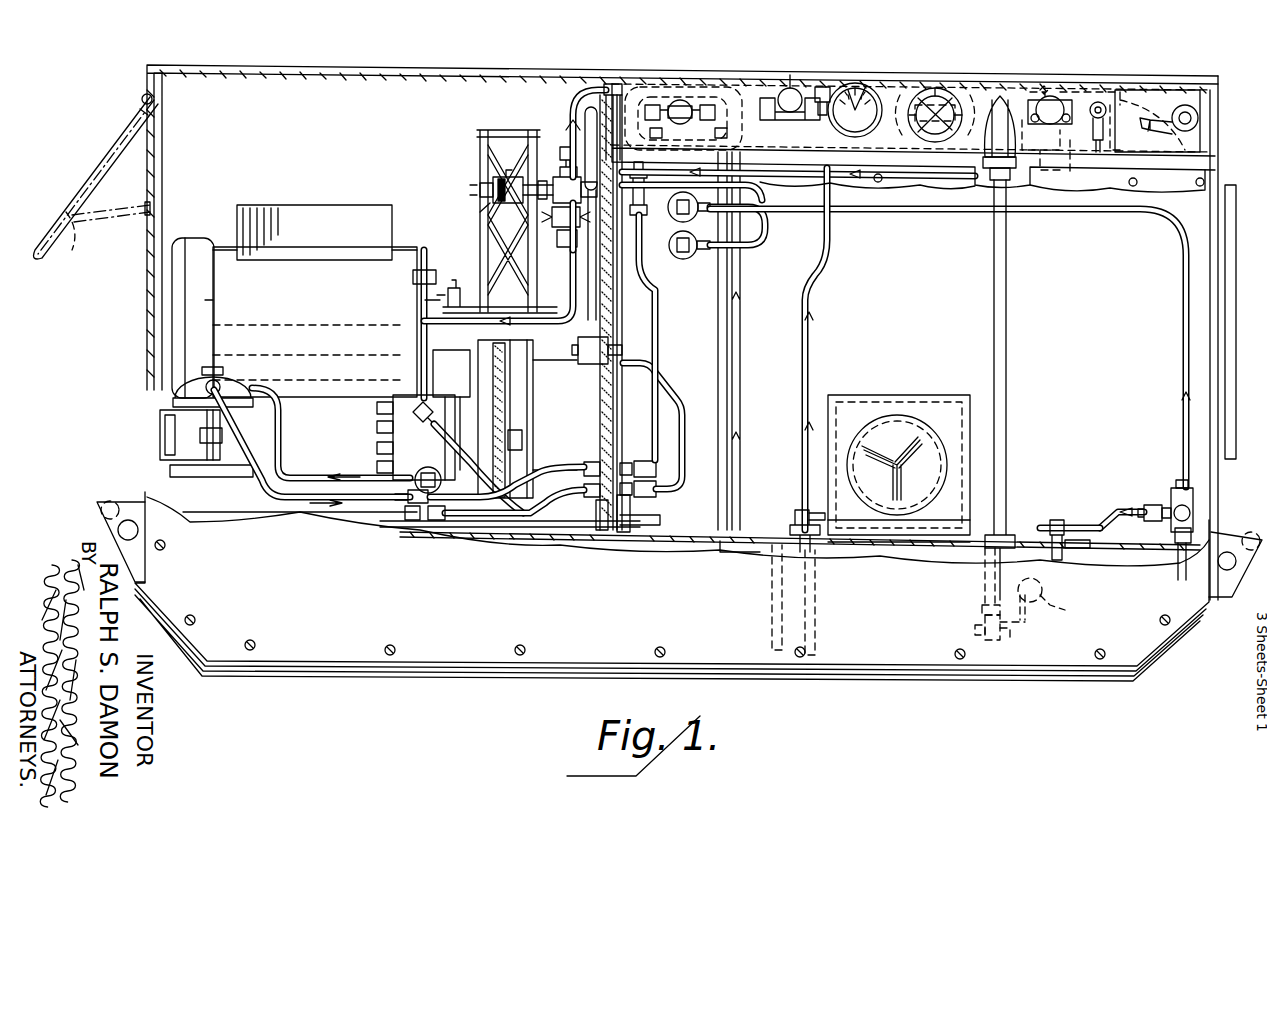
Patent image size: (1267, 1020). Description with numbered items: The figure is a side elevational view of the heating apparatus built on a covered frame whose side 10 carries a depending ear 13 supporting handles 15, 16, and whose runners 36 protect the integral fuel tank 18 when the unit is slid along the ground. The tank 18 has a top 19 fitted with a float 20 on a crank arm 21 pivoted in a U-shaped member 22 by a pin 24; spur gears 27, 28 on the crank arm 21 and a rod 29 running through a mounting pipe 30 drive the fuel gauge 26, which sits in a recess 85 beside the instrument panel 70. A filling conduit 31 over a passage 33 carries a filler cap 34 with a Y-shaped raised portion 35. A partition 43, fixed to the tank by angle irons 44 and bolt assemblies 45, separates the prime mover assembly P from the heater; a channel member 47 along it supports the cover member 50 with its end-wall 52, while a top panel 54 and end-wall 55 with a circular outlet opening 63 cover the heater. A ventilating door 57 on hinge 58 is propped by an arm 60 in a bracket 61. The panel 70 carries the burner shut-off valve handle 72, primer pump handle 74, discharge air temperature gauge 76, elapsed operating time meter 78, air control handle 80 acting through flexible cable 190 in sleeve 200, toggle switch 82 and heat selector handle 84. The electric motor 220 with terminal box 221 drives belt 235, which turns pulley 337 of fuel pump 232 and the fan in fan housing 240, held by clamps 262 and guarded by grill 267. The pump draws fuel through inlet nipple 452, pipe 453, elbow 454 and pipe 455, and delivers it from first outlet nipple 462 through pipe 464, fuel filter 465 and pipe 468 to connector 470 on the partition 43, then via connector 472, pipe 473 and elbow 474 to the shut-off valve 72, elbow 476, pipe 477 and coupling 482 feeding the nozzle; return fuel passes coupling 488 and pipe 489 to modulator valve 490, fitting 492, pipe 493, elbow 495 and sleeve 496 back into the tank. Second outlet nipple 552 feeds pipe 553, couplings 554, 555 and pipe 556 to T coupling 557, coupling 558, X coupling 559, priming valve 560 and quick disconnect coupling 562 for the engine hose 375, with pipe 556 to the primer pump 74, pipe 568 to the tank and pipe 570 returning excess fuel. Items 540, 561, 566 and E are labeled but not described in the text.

The side of frame 10 is at (460, 636).
The depending ear 13 is at (128, 502).
The handle 15 is at (1250, 530).
The handle 16 is at (102, 505).
The fuel reservoir tank 18 is at (700, 552).
The top of tank 19 is at (710, 562).
The float 20 is at (1068, 610).
The crank arm 21 is at (1028, 622).
The U-shaped member 22 is at (980, 605).
The pin 24 is at (1012, 632).
The fuel gauge 26 is at (995, 175).
The spur gear 27 is at (975, 630).
The spur gear 28 is at (992, 640).
The rod or shaft 29 is at (1040, 592).
The mounting pipe 30 is at (1006, 395).
The filling conduit 31 is at (842, 402).
The passage 33 is at (868, 550).
The filler cap 34 is at (895, 420).
The Y-shaped raised portion 35 is at (918, 435).
The runner 36 is at (190, 660).
The vertical plate or partition 43 is at (603, 297).
The angle iron 44 is at (610, 527).
The bolt assembly 45 is at (640, 527).
The channel member 47 is at (622, 84).
The cover member 50 is at (232, 70).
The end-wall 52 is at (155, 430).
The top panel 54 is at (1050, 90).
The end-wall 55 is at (1220, 140).
The ventilating door 57 is at (95, 170).
The hinge 58 is at (143, 95).
The prop arm 60 is at (135, 212).
The bracket 61 is at (68, 240).
The circular outlet opening 63 is at (1230, 250).
The instrument panel 70 is at (896, 88).
The burner shut-off valve 72 is at (784, 92).
The primer pump 74 is at (822, 87).
The discharge air temperature gauge 76 is at (858, 138).
The elapsed operating time meter 78 is at (925, 140).
The air control handle 80 is at (1050, 124).
The prime mover off-on toggle switch 82 is at (1104, 120).
The heat selector handle 84 is at (1188, 105).
The recess 85 is at (1000, 95).
The flexible cable 190 is at (1065, 90).
The sleeve 200 is at (1150, 90).
The electric motor 220 is at (314, 322).
The terminal box 221 is at (306, 212).
The fuel pump 232 is at (433, 458).
The belt 235 is at (505, 394).
The fan housing 240 is at (573, 383).
The clamp 262 is at (600, 345).
The fan grill or guard 267 is at (414, 277).
The pump pulley 337 is at (522, 423).
The carburetor inlet hose 375 is at (478, 190).
The inlet nipple 452 is at (413, 412).
The pipe 453 is at (552, 522).
The elbow 454 is at (802, 510).
The short pipe section 455 is at (812, 562).
The first outlet nipple 462 is at (410, 480).
The pipe 464 is at (282, 446).
The fuel filter 465 is at (232, 385).
The pipe 468 is at (265, 488).
The threaded connector 470 is at (586, 462).
The communicating connector 472 is at (626, 463).
The pipe 473 is at (718, 343).
The elbow 474 is at (683, 118).
The elbow 476 is at (672, 100).
The pipe 477 is at (732, 252).
The coupling 482 is at (680, 259).
The fitting or coupling 488 is at (766, 232).
The pipe 489 is at (852, 215).
The modulator valve 490 is at (1196, 505).
The threaded fitting 492 is at (1148, 503).
The pipe 493 is at (1078, 525).
The elbow 495 is at (1050, 522).
The threaded sleeve 496 is at (1090, 550).
The fitting 540 is at (1178, 580).
The second outlet nipple 552 is at (412, 548).
The pipe 553 is at (470, 522).
The coupling 554 is at (606, 532).
The coupling 555 is at (670, 490).
The pipe 556 is at (645, 392).
The T coupling 557 is at (676, 226).
The coupling 558 is at (586, 128).
The X coupling 559 is at (558, 178).
The manually controllable valve 560 is at (552, 215).
The pipe 561 is at (548, 240).
The quick disconnect coupling 562 is at (553, 180).
The fitting 566 is at (647, 188).
The pipe 568 is at (815, 290).
The pipe 570 is at (570, 118).
The prime mover assembly P is at (408, 258).
The enclosure E is at (298, 630).